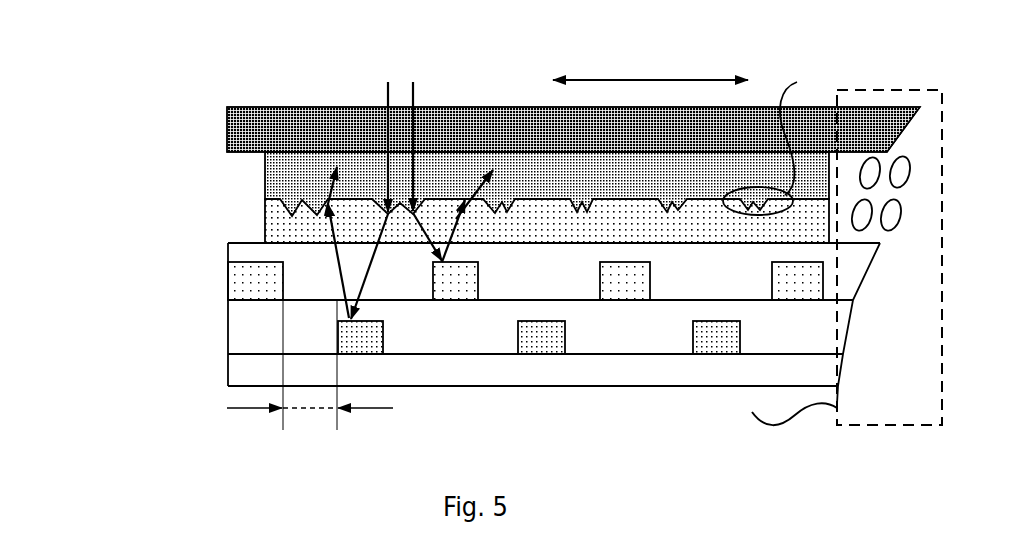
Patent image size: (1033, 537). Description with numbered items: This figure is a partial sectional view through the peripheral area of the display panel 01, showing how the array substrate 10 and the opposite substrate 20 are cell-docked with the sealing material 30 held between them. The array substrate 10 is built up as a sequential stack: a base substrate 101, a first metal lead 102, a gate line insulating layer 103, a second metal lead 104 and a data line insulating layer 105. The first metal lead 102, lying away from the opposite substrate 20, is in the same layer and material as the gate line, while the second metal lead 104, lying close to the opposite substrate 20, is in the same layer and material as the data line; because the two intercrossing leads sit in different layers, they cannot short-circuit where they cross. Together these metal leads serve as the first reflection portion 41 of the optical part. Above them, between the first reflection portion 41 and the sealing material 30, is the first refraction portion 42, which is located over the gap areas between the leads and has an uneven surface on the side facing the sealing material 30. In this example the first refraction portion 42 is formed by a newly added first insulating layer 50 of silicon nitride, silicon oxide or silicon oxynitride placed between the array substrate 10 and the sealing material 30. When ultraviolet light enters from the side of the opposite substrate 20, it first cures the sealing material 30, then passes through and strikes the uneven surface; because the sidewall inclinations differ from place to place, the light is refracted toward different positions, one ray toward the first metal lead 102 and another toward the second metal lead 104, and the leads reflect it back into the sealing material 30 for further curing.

The display panel 01 is at (214, 88).
The array substrate 10 is at (885, 243).
The opposite substrate 20 is at (245, 140).
The sealing material 30 is at (277, 185).
The first reflection portion 41 is at (95, 263).
The first refraction portion 42 is at (272, 223).
The first insulating layer 50 is at (547, 221).
The base substrate 101 is at (245, 377).
The first metal lead 102 is at (337, 340).
The gate line insulating layer 103 is at (647, 342).
The second metal lead 104 is at (245, 292).
The data line insulating layer 105 is at (503, 283).